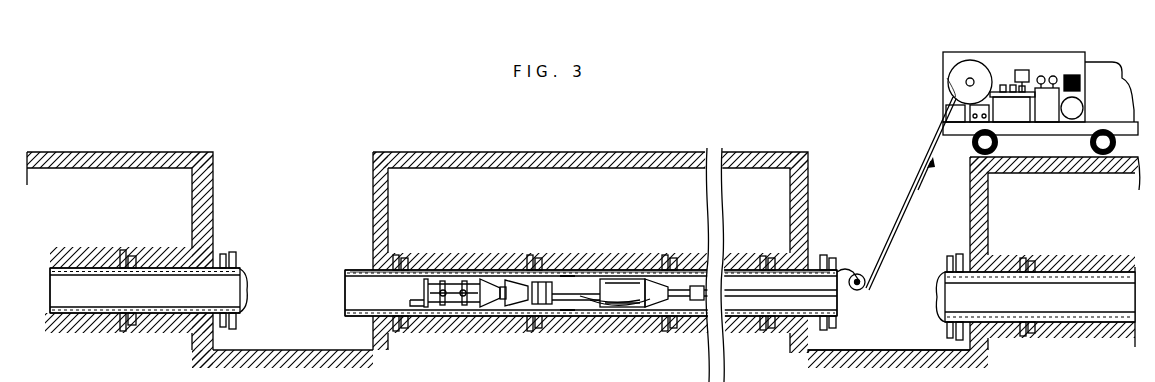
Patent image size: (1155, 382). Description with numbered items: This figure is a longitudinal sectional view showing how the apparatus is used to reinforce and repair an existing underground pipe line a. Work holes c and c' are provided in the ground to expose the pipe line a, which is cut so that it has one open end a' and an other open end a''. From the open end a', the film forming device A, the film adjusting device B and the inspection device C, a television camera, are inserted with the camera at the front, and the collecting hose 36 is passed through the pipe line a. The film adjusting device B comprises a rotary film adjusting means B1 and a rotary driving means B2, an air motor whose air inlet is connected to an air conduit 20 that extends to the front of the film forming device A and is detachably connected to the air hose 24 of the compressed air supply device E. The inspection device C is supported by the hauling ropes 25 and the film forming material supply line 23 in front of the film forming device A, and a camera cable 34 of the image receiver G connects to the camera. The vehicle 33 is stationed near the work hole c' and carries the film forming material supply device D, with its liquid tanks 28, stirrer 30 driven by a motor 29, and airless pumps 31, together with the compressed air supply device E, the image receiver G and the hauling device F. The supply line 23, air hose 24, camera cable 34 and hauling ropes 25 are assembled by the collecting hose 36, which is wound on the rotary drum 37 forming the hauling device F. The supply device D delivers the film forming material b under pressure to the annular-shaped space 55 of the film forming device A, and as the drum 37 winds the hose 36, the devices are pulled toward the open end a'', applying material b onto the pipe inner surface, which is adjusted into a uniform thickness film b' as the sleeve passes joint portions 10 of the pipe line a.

The joint portion 10 is at (532, 262).
The air conduit 20 is at (512, 318).
The film forming material supply line 23 is at (641, 312).
The air hose 24 is at (610, 305).
The hauling ropes 25 is at (602, 272).
The liquid tanks 28 is at (1045, 122).
The motor 29 is at (1053, 76).
The stirrer 30 is at (1073, 119).
The airless pumps 31 is at (1015, 122).
The vehicle 33 is at (1122, 72).
The camera cable 34 is at (698, 316).
The collecting hose 36 is at (897, 224).
The rotary drum 37 is at (968, 62).
The annular-shaped space 55 is at (540, 318).
The film forming device A is at (592, 318).
The film adjusting device B is at (468, 280).
The rotary film adjusting means B1 is at (432, 318).
The rotary driving means B2 is at (484, 318).
The inspection device C is at (673, 316).
The film forming material supply device D is at (1020, 72).
The compressed air supply device E is at (1073, 74).
The hauling device F is at (947, 78).
The image receiver G is at (965, 122).
The pipe line a is at (590, 251).
The open end a' is at (576, 293).
The other open end a'' is at (842, 292).
The film forming material b is at (567, 295).
The uniform thickness film b' is at (238, 290).
The work hole c is at (293, 256).
The work hole c' is at (889, 260).